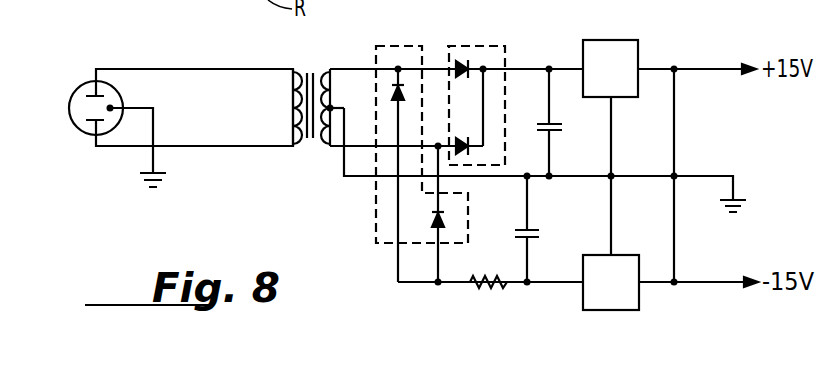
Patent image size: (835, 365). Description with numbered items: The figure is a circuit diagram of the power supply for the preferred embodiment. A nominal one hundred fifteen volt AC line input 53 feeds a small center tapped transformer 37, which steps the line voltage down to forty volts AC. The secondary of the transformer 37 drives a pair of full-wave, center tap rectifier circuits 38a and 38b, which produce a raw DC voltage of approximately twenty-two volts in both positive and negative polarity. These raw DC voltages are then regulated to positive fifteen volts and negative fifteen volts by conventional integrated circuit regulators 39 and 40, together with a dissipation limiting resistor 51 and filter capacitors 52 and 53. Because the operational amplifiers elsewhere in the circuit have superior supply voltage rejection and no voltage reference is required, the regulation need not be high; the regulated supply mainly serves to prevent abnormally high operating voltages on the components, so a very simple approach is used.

The AC line input 53 is at (80, 101).
The center tapped transformer 37 is at (311, 147).
The full-wave center tap rectifier circuit 38a is at (467, 44).
The full-wave center tap rectifier circuit 38b is at (374, 195).
The integrated circuit regulator 39 is at (623, 83).
The integrated circuit regulator 40 is at (623, 297).
The dissipation limiting resistor 51 is at (492, 292).
The filter capacitor 52 is at (553, 133).